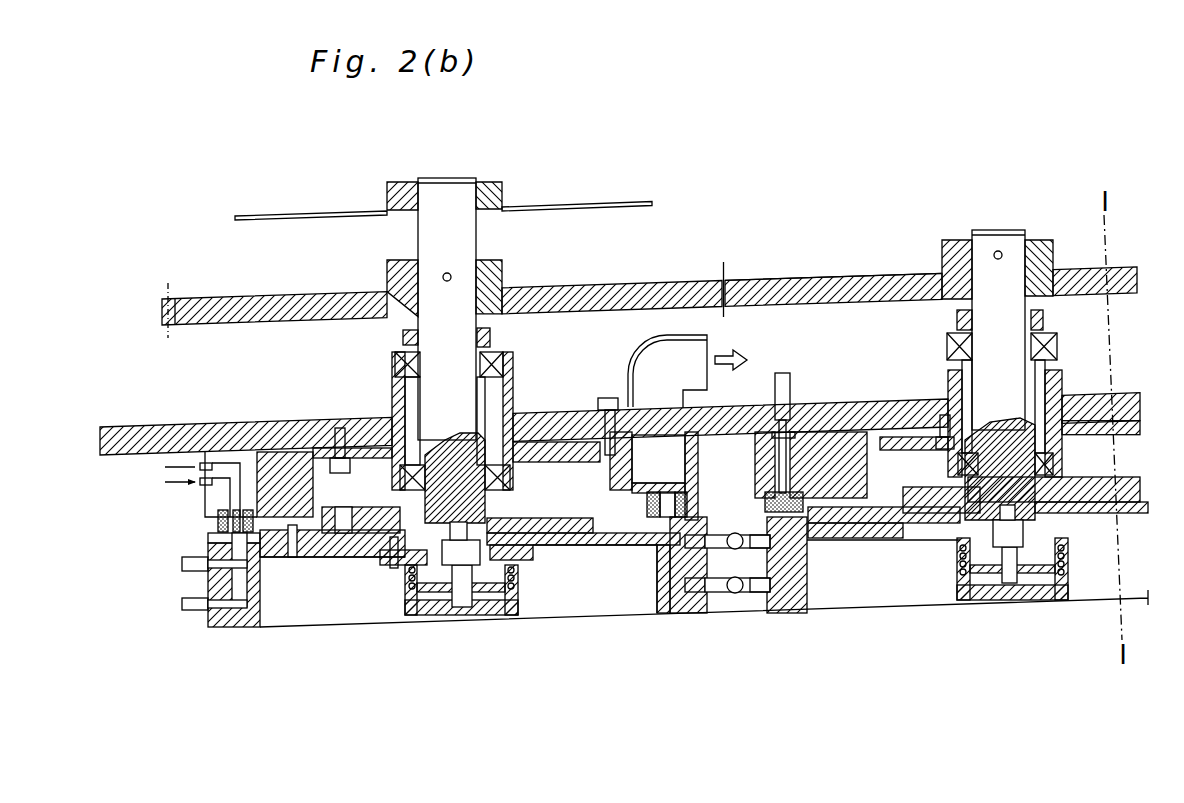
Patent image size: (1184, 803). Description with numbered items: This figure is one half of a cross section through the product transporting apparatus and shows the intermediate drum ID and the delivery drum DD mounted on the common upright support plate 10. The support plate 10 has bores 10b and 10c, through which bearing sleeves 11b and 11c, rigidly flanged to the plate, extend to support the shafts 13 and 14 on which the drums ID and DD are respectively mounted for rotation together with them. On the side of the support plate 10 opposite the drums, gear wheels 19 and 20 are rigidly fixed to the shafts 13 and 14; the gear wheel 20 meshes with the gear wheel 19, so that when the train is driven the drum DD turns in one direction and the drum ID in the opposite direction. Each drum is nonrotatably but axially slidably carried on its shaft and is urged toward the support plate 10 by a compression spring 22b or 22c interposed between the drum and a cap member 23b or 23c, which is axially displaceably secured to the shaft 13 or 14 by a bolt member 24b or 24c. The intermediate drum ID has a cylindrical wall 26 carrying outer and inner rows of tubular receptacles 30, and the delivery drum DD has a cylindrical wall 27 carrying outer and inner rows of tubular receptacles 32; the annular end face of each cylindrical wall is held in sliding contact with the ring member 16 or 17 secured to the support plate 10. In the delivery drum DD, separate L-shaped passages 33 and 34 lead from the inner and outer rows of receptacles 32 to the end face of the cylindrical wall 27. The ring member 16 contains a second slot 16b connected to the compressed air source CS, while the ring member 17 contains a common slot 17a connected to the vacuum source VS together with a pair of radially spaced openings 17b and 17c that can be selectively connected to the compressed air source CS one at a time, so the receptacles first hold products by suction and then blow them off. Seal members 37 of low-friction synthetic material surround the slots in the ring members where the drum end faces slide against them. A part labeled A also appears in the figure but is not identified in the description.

The support plate 10 is at (265, 427).
The bore 10b is at (1118, 393).
The bore 10c is at (383, 430).
The bearing sleeve 11b is at (1057, 337).
The bearing sleeve 11c is at (510, 365).
The shaft 13 is at (990, 240).
The shaft 14 is at (445, 193).
The ring member 16 is at (882, 430).
The second slot 16b is at (857, 438).
The ring member 17 is at (283, 467).
The common slot 17a is at (663, 487).
The opening 17b is at (220, 493).
The opening 17c is at (216, 543).
The gear wheel 19 is at (892, 275).
The gear wheel 20 is at (633, 287).
The compression spring 22b is at (968, 600).
The compression spring 22c is at (517, 590).
The cap member 23b is at (1065, 600).
The cap member 23c is at (493, 618).
The bolt member 24b is at (1010, 605).
The bolt member 24c is at (423, 618).
The cylindrical wall 26 is at (803, 573).
The cylindrical wall 27 is at (227, 617).
The tubular receptacles 30 is at (750, 517).
The tubular receptacles 32 is at (186, 577).
The passages 33 is at (262, 585).
The passages 34 is at (188, 559).
The seal members 37 is at (250, 517).
The coupling A is at (737, 680).
The compressed air source CS is at (782, 366).
The delivery drum DD is at (320, 564).
The intermediate drum ID is at (890, 549).
The vacuum source VS is at (725, 348).